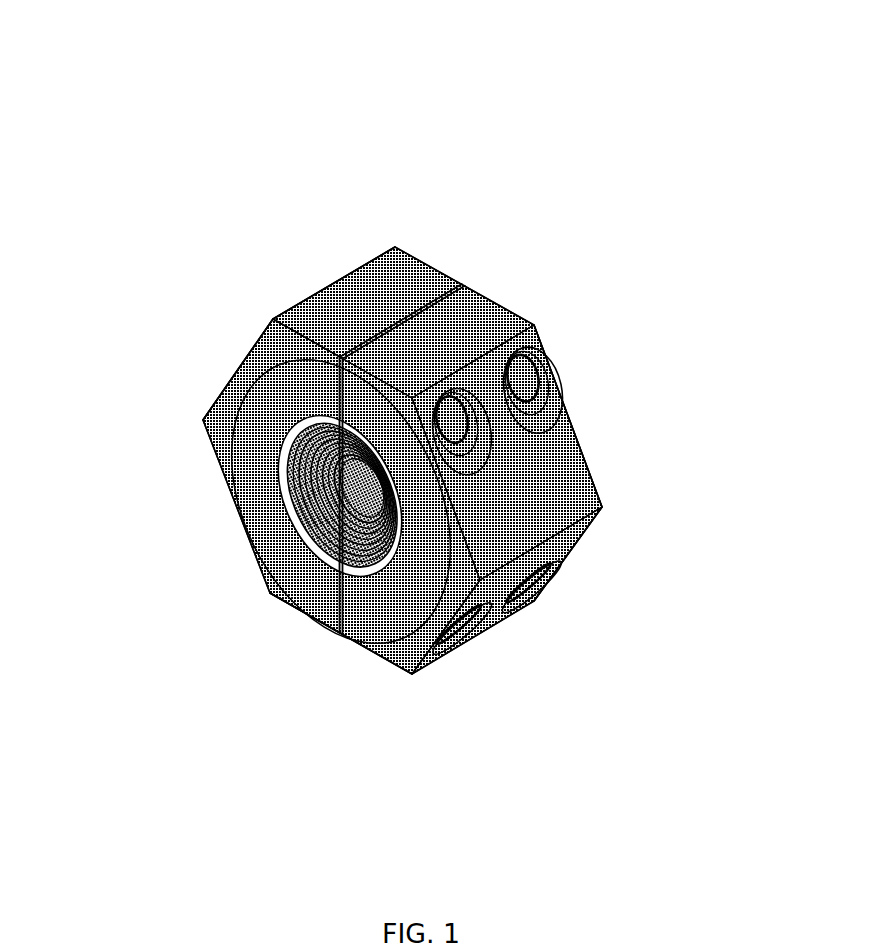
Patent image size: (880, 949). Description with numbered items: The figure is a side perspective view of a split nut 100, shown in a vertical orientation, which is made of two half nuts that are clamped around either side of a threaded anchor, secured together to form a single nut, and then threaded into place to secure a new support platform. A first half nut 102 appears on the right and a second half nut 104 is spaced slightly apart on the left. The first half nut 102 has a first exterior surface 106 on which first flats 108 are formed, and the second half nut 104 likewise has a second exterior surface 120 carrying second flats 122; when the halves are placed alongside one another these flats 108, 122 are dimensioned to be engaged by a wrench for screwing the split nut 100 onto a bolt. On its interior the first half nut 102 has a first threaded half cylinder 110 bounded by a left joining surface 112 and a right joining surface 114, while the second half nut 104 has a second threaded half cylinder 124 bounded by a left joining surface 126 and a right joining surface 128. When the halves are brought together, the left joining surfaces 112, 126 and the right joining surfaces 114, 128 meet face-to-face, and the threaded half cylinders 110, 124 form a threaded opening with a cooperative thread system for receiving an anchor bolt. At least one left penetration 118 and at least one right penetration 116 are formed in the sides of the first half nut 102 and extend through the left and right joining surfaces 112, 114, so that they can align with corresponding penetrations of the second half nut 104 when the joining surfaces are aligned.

The split nut 100 is at (150, 130).
The first half nut 102 is at (590, 433).
The second half nut 104 is at (428, 265).
The first exterior surface 106 is at (600, 505).
The first flats 108 is at (528, 320).
The first threaded half cylinder 110 is at (453, 650).
The left joining surface 112 is at (354, 642).
The right joining surface 114 is at (495, 298).
The right penetration 116 is at (523, 607).
The left penetration 118 is at (535, 378).
The second exterior surface 120 is at (205, 412).
The second flats 122 is at (297, 303).
The second threaded half cylinder 124 is at (243, 517).
The left joining surface 126 is at (333, 634).
The right joining surface 128 is at (267, 327).